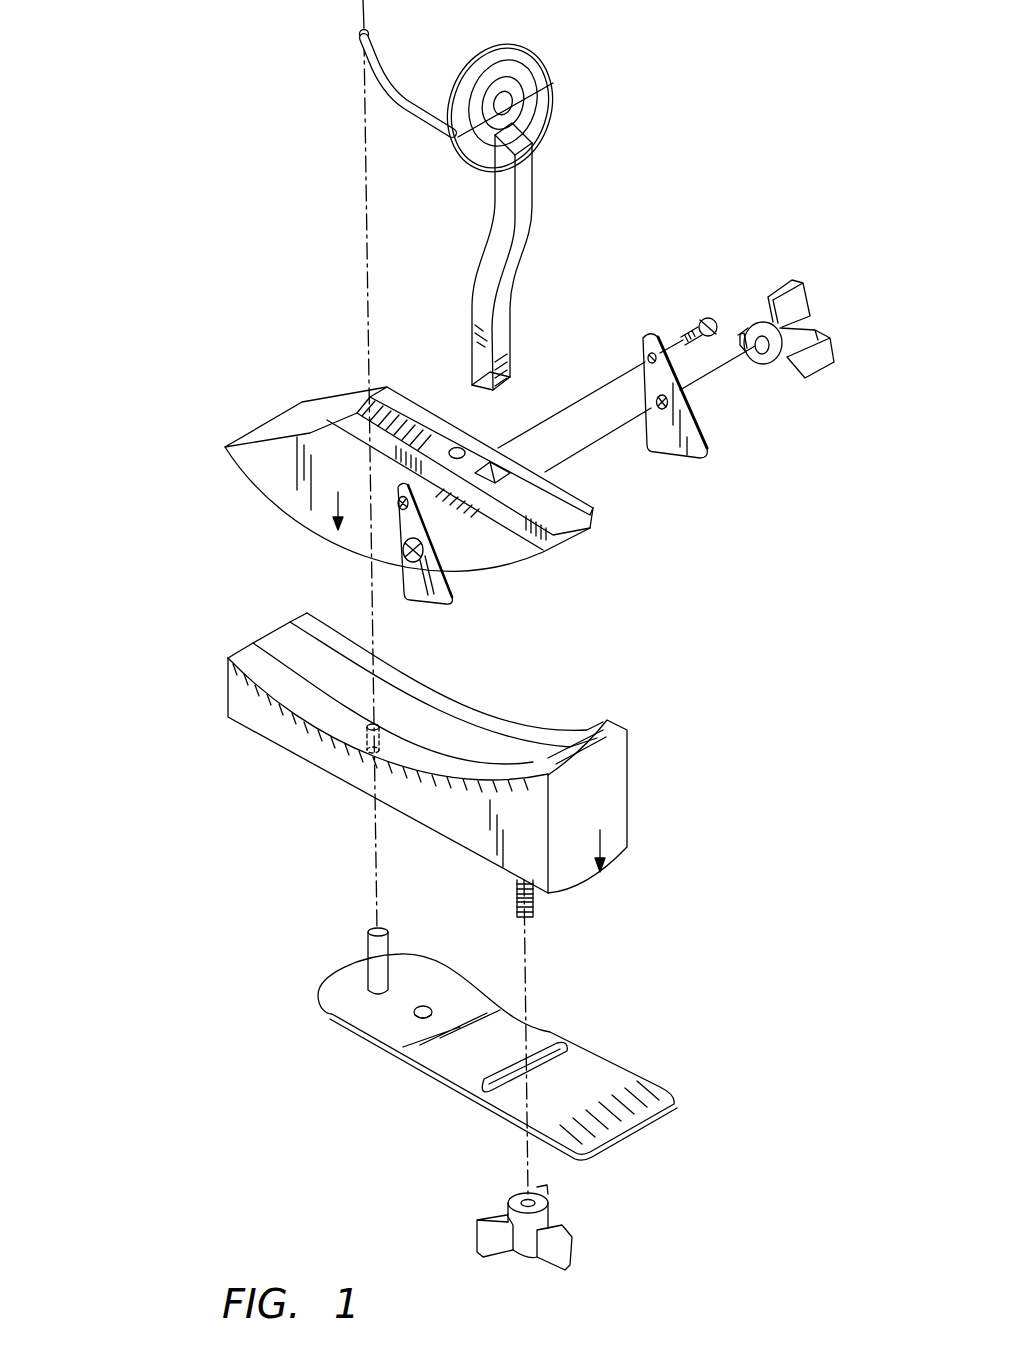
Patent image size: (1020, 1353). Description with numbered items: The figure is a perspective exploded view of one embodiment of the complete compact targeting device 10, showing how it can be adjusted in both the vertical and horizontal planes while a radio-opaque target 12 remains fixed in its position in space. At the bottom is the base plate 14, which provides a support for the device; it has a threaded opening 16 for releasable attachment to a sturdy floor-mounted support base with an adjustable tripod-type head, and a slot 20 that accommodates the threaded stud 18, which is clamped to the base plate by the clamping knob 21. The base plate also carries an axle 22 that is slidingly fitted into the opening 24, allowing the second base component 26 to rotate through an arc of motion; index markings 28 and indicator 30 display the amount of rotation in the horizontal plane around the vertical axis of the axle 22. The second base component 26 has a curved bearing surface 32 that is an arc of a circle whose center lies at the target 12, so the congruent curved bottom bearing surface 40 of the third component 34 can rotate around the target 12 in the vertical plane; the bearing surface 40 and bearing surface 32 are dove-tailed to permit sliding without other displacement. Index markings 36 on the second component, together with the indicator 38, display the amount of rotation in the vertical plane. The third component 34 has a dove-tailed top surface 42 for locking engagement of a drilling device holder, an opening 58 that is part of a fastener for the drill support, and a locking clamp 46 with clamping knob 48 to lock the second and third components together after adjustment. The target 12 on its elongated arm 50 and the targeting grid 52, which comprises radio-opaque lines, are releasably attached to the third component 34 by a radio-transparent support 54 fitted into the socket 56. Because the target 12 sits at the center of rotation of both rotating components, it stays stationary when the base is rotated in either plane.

The device 10 is at (128, 363).
The radio-opaque target 12 is at (360, 33).
The base plate 14 is at (457, 1063).
The threaded opening 16 is at (414, 1014).
The threaded stud 18 is at (535, 905).
The slot 20 is at (550, 1052).
The clamping knob 21 is at (500, 1258).
The axle 22 is at (367, 944).
The opening 24 is at (367, 748).
The second base component 26 is at (610, 763).
The index markings 28 is at (637, 1093).
The indicator 30 is at (604, 838).
The curved bearing surface 32 is at (417, 707).
The third component 34 is at (276, 468).
The index markings 36 is at (279, 744).
The indicator 38 is at (325, 517).
The bearing surface 40 is at (577, 543).
The top surface 42 is at (600, 502).
The locking clamp 46 is at (700, 434).
The clamping knob 48 is at (828, 338).
The elongated arm 50 is at (384, 60).
The targeting grid 52 is at (548, 68).
The radio-transparent support 54 is at (527, 222).
The socket 56 is at (520, 463).
The opening 58 is at (471, 448).